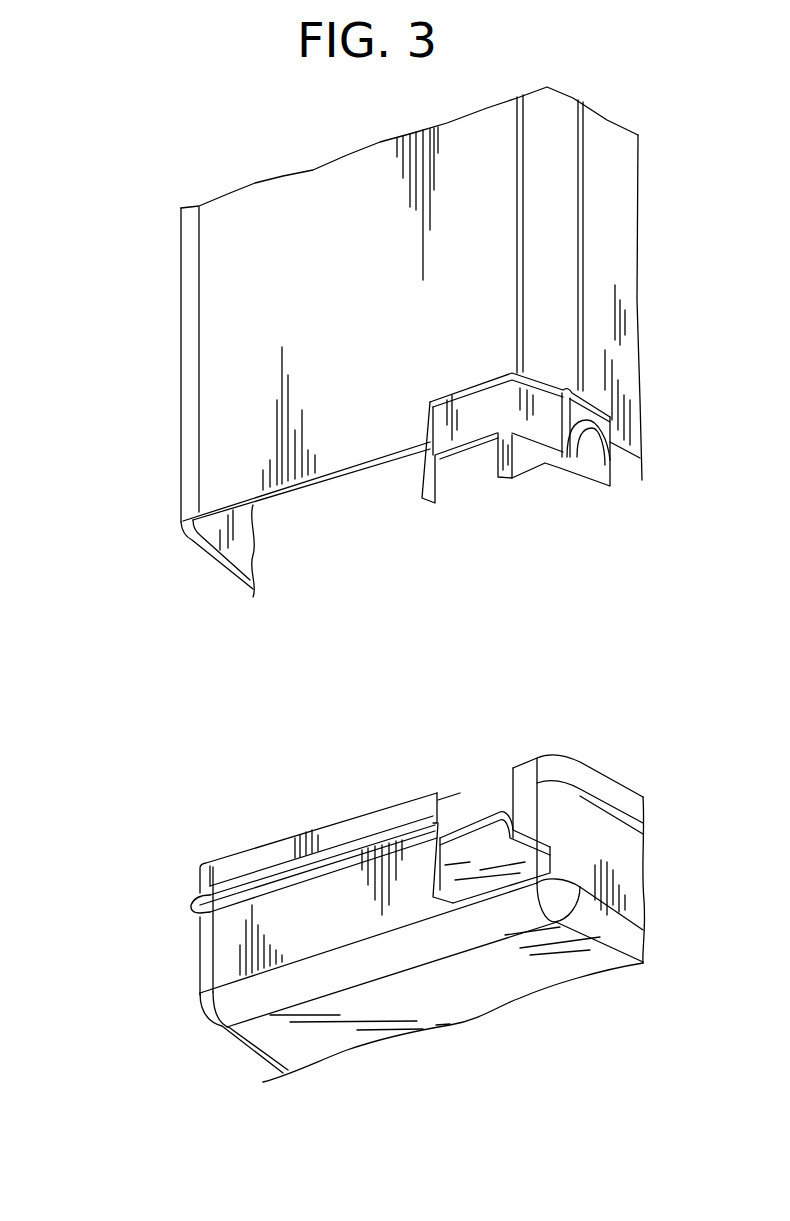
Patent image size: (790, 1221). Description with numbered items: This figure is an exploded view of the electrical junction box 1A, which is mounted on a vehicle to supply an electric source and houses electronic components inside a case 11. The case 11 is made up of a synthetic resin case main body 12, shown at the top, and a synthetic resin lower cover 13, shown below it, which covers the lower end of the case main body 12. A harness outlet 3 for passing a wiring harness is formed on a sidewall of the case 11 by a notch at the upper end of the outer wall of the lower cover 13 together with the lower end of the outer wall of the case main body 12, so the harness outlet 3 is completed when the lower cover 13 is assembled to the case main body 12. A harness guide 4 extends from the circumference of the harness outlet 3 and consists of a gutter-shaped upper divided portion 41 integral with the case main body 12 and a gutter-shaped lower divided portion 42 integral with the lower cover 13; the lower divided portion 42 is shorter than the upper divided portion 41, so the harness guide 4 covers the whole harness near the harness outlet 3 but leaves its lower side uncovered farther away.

The electrical junction box 1A is at (677, 79).
The case 11 is at (110, 640).
The case main body 12 is at (180, 468).
The lower cover 13 is at (197, 938).
The harness guide 4 is at (373, 625).
The upper divided portion 41 is at (472, 423).
The lower divided portion 42 is at (483, 822).
The harness outlet 3 is at (457, 807).